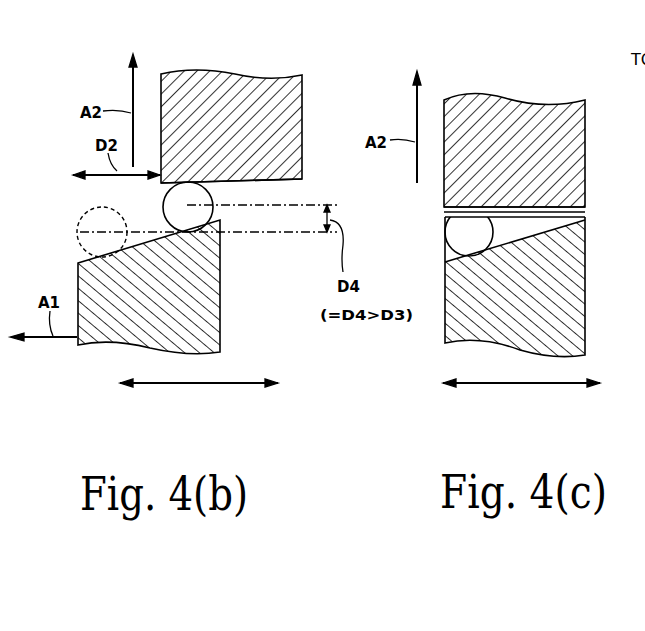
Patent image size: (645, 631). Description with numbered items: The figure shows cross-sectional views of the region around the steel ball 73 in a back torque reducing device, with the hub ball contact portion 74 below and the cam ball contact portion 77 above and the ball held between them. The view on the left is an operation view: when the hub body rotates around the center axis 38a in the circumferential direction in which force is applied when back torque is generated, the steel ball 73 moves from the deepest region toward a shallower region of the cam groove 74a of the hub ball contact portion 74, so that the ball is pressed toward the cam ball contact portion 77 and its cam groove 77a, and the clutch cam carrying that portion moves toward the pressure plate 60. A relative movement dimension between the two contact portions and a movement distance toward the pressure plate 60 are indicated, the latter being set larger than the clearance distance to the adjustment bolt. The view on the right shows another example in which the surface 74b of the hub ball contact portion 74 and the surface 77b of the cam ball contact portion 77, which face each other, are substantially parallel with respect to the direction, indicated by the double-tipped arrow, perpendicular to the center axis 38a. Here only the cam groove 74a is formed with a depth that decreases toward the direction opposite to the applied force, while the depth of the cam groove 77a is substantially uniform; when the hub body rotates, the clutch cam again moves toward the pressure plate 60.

In FIG. 4B, the steel ball 73 is at (173, 210).
In FIG. 4C, the steel ball 73 is at (452, 235).
In FIG. 4B, the hub ball contact portion 74 is at (195, 298).
In FIG. 4C, the hub ball contact portion 74 is at (557, 305).
In FIG. 4B, the cam groove 74a is at (95, 238).
In FIG. 4C, the cam groove 74a is at (553, 228).
In FIG. 4C, the surface 74b is at (585, 215).
In FIG. 4B, the cam ball contact portion 77 is at (278, 105).
In FIG. 4C, the cam ball contact portion 77 is at (560, 122).
In FIG. 4B, the cam groove 77a is at (233, 188).
In FIG. 4C, the cam groove 77a is at (560, 184).
In FIG. 4C, the surface 77b is at (573, 196).
In FIG. 4B, the pressure plate 60 is at (147, 101).
In FIG. 4C, the pressure plate 60 is at (465, 116).
In FIG. 4B, the center axis 38a is at (187, 410).
In FIG. 4C, the center axis 38a is at (518, 410).